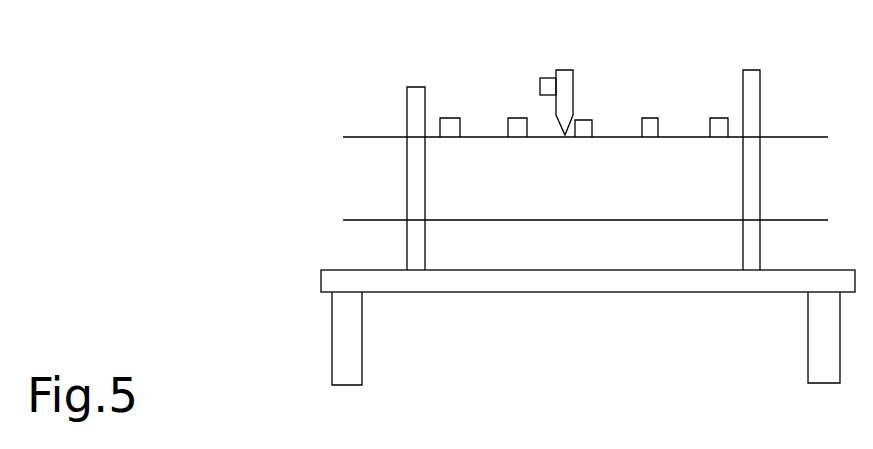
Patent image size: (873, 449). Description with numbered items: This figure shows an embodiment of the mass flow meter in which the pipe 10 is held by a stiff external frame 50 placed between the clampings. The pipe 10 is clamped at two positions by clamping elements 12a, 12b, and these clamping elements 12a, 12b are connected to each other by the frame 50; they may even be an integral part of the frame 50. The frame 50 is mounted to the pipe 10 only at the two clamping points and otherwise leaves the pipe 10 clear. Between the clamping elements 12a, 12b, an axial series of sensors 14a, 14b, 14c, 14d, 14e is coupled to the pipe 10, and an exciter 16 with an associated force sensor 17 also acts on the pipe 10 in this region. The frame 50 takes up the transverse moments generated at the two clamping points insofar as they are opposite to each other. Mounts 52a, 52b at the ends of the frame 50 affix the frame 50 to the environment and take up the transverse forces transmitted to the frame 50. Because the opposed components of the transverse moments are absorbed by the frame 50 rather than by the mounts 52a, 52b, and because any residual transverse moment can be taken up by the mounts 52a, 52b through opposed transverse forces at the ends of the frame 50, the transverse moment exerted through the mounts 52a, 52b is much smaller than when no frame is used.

The pipe 10 is at (537, 218).
The clamping element 12a is at (407, 172).
The clamping element 12b is at (743, 165).
The sensor 14a is at (440, 128).
The sensor 14b is at (508, 128).
The sensor 14c is at (592, 128).
The sensor 14d is at (658, 128).
The sensor 14e is at (728, 130).
The exciter 16 is at (573, 90).
The force sensor 17 is at (540, 84).
The frame 50 is at (321, 273).
The mount 52a is at (332, 340).
The mount 52b is at (808, 340).